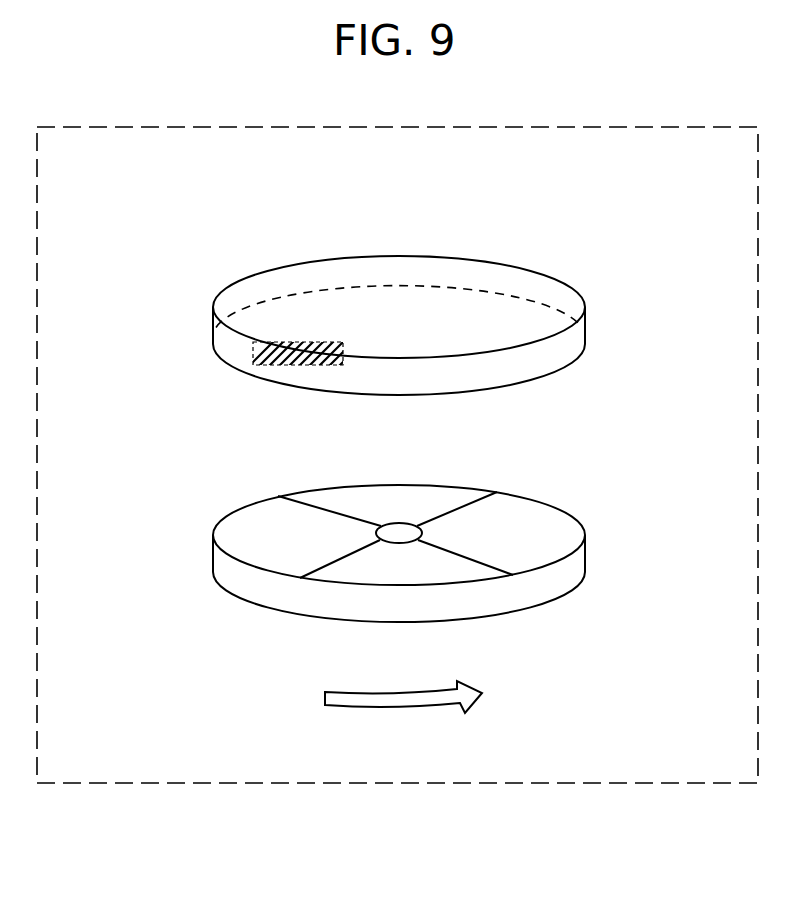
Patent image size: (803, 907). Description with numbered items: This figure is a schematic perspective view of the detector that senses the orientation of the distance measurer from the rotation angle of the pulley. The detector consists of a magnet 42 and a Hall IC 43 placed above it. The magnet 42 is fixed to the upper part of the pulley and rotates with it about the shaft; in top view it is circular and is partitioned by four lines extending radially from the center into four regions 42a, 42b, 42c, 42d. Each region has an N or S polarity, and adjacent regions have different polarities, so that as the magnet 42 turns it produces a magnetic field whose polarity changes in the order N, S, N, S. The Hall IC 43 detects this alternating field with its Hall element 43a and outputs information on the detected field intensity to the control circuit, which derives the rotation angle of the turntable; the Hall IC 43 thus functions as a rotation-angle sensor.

The Hall IC 43 is at (634, 251).
The Hall element 43a is at (283, 366).
The magnet 42 is at (397, 544).
The region 42a is at (330, 498).
The region 42b is at (520, 512).
The region 42c is at (442, 570).
The region 42d is at (238, 545).